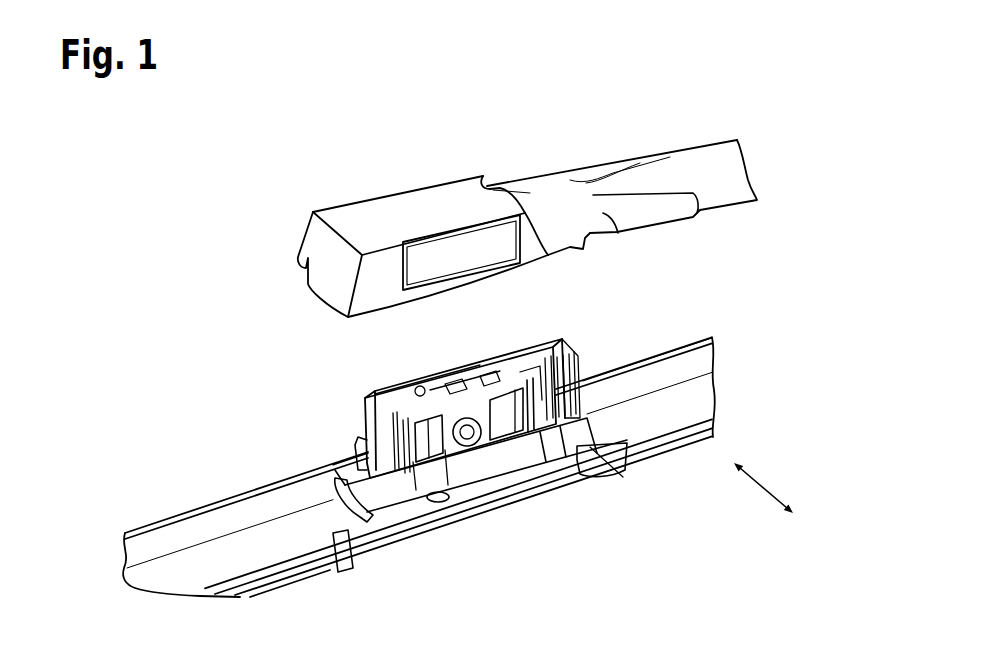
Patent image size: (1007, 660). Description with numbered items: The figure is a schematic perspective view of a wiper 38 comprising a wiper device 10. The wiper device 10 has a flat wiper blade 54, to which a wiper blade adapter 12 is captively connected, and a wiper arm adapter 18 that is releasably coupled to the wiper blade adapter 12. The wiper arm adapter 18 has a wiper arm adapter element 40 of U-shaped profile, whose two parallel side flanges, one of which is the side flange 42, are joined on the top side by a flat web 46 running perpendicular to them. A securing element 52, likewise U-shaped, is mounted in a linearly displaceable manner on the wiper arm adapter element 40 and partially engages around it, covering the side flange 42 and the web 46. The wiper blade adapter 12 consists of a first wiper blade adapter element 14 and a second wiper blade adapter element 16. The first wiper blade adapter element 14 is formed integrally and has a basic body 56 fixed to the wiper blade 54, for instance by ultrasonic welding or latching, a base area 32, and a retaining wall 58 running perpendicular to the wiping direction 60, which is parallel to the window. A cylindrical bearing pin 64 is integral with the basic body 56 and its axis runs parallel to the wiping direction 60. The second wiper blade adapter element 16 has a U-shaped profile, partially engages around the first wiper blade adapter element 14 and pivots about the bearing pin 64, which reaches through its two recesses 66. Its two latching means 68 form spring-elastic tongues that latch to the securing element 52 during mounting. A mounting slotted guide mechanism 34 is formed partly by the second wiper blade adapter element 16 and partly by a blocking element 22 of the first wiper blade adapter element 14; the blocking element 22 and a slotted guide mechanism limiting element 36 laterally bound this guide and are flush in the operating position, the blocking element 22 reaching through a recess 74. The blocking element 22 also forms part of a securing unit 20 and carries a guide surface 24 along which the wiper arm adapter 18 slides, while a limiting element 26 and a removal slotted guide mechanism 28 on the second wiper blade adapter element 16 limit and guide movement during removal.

The wiper device 10 is at (157, 191).
The wiper blade adapter 12 is at (630, 504).
The first wiper blade adapter element 14 is at (573, 480).
The second wiper blade adapter element 16 is at (402, 402).
The wiper arm adapter 18 is at (558, 140).
The securing unit 20 is at (597, 367).
The blocking element 22 is at (582, 377).
The guide surface 24 is at (527, 373).
The limiting element 26 is at (545, 452).
The removal slotted guide mechanism 28 is at (528, 365).
The base area 32 is at (382, 553).
The mounting slotted guide mechanism 34 is at (566, 372).
The slotted guide mechanism limiting element 36 is at (560, 372).
The wiper 38 is at (766, 119).
The wiper arm adapter element 40 is at (693, 167).
The side flange 42 is at (603, 213).
The web 46 is at (530, 187).
The securing element 52 is at (377, 210).
The wiper blade 54 is at (297, 572).
The basic body 56 is at (578, 458).
The retaining wall 58 is at (378, 450).
The wiping direction 60 is at (764, 480).
The bearing pin 64 is at (478, 458).
The recess 66 is at (459, 456).
The latching means 68 is at (430, 480).
The recess 74 is at (572, 483).